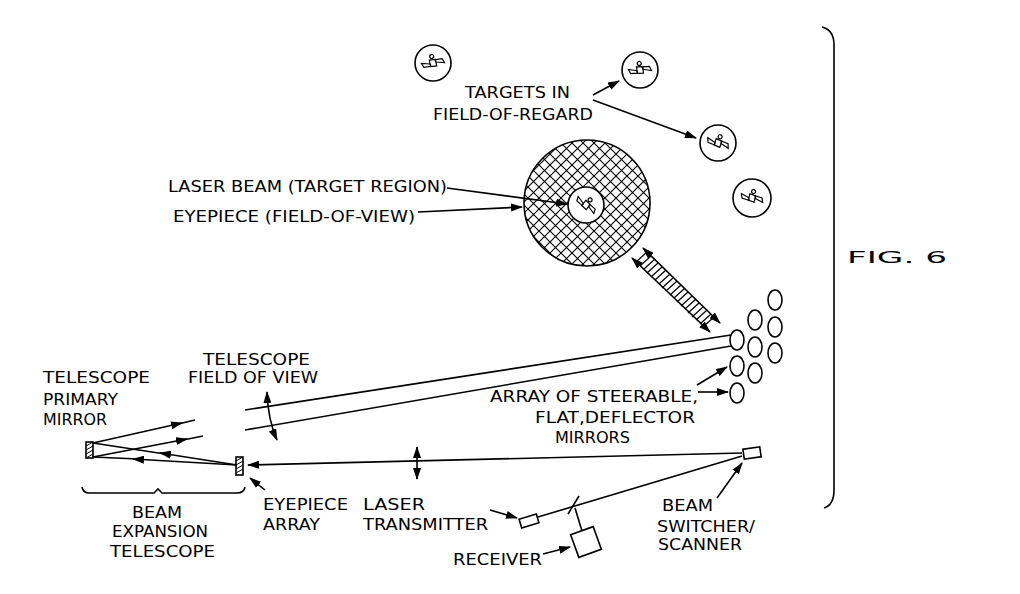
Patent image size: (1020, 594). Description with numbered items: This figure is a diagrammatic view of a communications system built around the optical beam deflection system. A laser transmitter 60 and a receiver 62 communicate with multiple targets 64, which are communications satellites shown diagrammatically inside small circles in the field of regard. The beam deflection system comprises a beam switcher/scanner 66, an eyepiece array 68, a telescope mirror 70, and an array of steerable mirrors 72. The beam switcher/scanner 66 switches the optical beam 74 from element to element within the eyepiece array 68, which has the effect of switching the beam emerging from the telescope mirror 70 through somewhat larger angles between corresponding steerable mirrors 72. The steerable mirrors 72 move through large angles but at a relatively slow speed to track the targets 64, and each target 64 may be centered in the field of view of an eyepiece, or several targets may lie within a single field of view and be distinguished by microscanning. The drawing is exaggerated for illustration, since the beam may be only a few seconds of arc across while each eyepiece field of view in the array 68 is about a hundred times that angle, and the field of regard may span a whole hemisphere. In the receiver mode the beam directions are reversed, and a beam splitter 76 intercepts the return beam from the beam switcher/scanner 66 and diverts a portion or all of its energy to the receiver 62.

The laser transmitter 60 is at (523, 514).
The receiver 62 is at (600, 540).
The targets 64 is at (446, 53).
The beam switcher/scanner 66 is at (762, 452).
The eyepiece array 68 is at (244, 458).
The telescope mirror 70 is at (93, 441).
The array of steerable mirrors 72 is at (791, 327).
The optical beam 74 is at (338, 463).
The beam splitter 76 is at (575, 497).